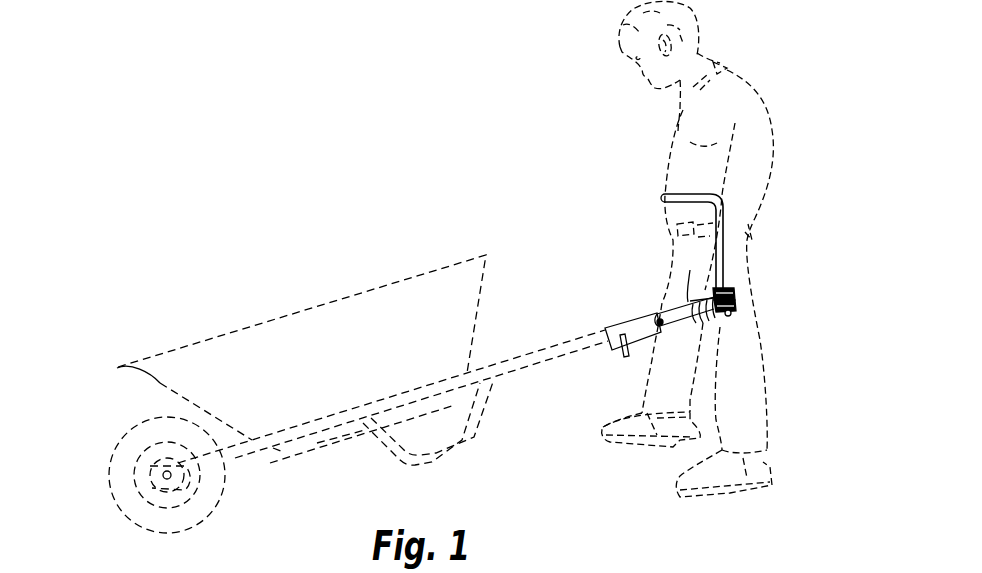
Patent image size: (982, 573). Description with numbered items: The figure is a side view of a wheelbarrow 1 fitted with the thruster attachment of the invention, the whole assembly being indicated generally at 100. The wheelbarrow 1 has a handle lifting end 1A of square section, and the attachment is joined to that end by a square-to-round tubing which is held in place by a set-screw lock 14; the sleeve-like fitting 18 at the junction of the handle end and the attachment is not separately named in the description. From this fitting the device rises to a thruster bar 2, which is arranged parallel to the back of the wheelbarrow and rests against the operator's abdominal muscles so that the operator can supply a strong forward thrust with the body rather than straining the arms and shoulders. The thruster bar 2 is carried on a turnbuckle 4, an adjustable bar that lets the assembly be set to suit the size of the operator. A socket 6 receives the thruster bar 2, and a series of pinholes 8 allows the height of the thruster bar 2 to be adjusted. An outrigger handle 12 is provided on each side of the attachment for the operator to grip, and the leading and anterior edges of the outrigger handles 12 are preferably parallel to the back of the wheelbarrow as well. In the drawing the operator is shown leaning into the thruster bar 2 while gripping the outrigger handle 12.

The wheelbarrow assembly 100 is at (172, 228).
The wheelbarrow 1 is at (341, 290).
The handle lifting end 1A is at (240, 461).
The turnbuckle 4 is at (664, 198).
The thruster bar 2 is at (677, 207).
The pinholes 8 is at (730, 290).
The socket 6 is at (733, 303).
The outrigger handle 12 is at (657, 320).
The sleeve 18 is at (612, 326).
The set-screw lock 14 is at (626, 357).